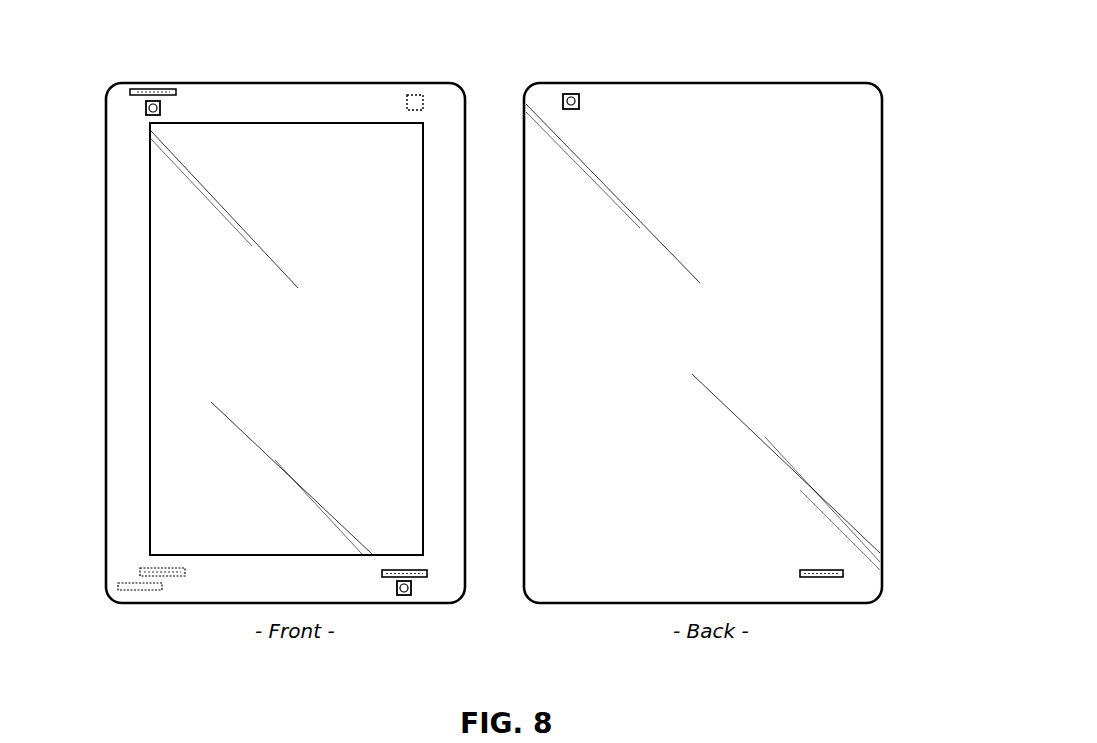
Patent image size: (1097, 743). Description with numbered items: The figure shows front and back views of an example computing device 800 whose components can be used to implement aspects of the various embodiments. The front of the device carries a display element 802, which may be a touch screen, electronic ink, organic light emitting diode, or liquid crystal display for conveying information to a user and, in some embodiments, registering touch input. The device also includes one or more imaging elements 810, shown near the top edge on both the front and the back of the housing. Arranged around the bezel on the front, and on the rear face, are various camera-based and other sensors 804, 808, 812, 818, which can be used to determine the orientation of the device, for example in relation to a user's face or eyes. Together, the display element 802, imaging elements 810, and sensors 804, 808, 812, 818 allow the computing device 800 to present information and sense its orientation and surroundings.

The computing device 800 is at (909, 88).
The display element 802 is at (148, 247).
The camera-based sensor 804 is at (146, 108).
The sensor 808 is at (420, 577).
The imaging element 810 is at (413, 94).
The sensor 812 is at (165, 576).
The sensor 818 is at (137, 590).